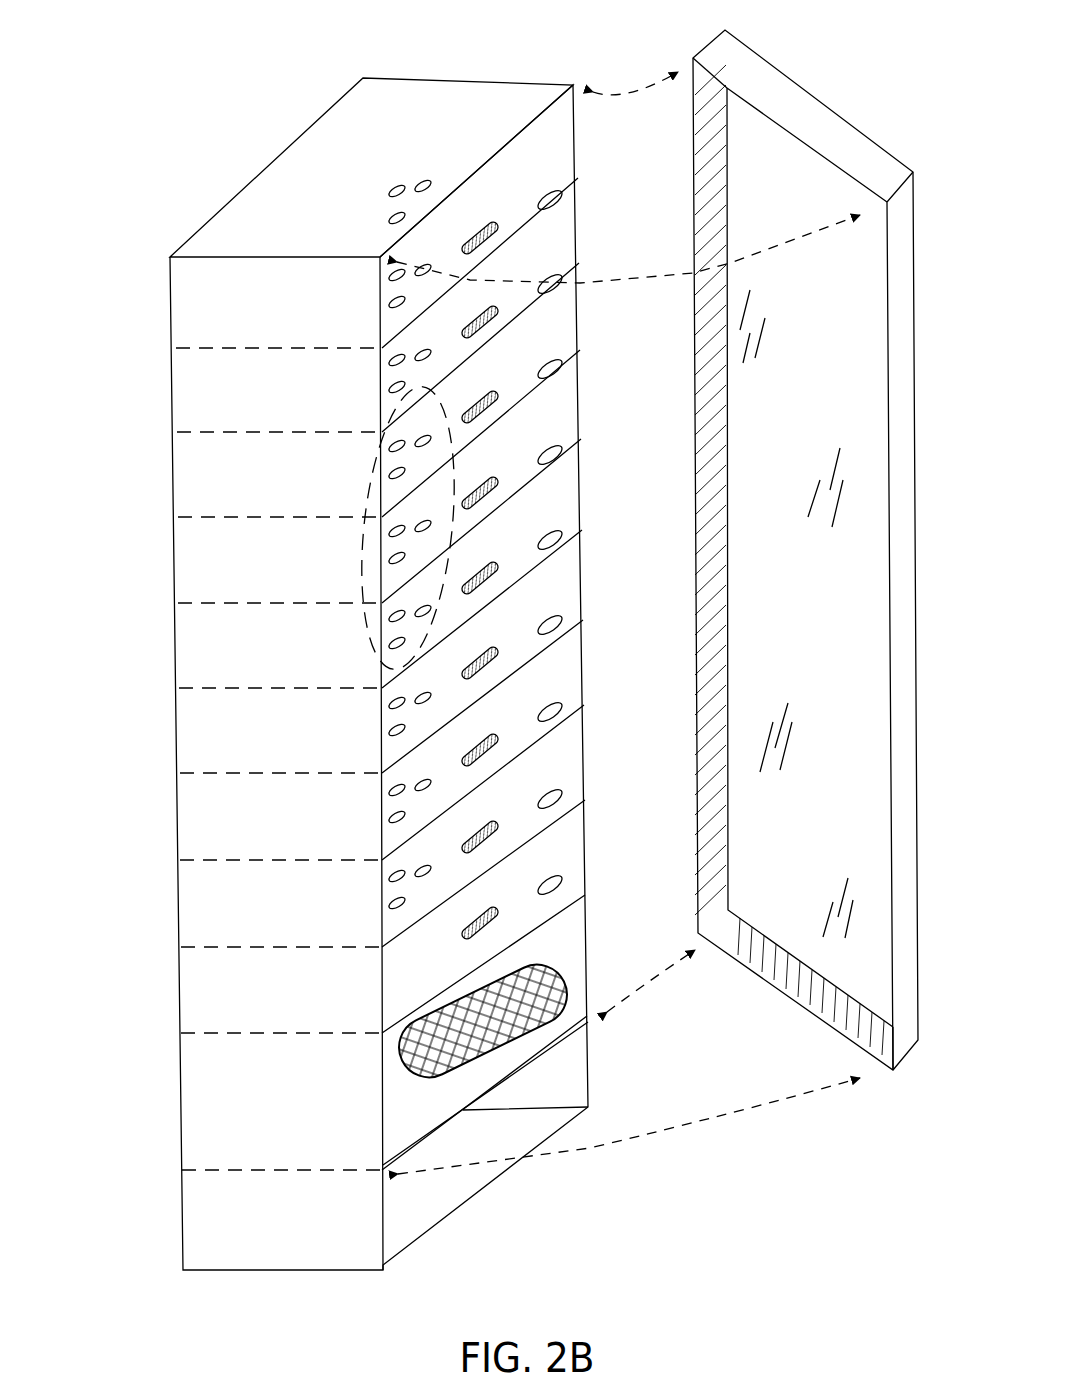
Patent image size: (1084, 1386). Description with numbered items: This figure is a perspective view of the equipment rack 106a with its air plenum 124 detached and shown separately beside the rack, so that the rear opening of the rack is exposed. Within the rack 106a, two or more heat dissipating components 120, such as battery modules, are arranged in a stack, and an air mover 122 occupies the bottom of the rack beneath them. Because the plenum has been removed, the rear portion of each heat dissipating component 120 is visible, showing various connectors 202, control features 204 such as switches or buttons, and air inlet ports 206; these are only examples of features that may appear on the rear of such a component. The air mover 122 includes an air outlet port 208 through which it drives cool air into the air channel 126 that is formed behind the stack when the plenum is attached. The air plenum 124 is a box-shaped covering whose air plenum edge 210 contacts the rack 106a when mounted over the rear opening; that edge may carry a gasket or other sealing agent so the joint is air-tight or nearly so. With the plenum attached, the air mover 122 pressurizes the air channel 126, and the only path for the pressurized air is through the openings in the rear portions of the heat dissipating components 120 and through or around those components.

The equipment rack 106a is at (412, 110).
The heat dissipating component 120 is at (279, 663).
The air mover 122 is at (282, 1135).
The air plenum 124 is at (800, 110).
The air channel 126 is at (755, 510).
The connectors 202 is at (500, 463).
The control features 204 is at (560, 710).
The air inlet ports 206 is at (360, 548).
The air outlet ports 208 is at (560, 985).
The air plenum edge 210 is at (780, 988).